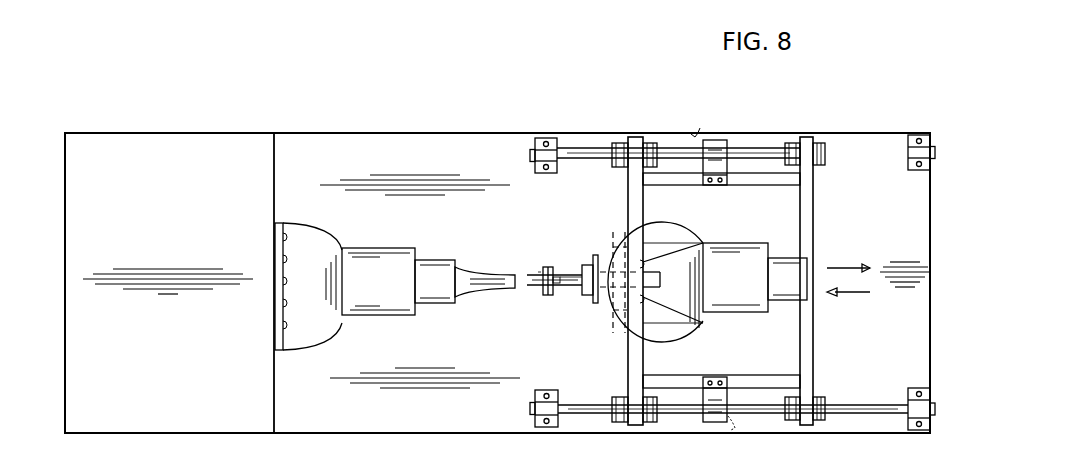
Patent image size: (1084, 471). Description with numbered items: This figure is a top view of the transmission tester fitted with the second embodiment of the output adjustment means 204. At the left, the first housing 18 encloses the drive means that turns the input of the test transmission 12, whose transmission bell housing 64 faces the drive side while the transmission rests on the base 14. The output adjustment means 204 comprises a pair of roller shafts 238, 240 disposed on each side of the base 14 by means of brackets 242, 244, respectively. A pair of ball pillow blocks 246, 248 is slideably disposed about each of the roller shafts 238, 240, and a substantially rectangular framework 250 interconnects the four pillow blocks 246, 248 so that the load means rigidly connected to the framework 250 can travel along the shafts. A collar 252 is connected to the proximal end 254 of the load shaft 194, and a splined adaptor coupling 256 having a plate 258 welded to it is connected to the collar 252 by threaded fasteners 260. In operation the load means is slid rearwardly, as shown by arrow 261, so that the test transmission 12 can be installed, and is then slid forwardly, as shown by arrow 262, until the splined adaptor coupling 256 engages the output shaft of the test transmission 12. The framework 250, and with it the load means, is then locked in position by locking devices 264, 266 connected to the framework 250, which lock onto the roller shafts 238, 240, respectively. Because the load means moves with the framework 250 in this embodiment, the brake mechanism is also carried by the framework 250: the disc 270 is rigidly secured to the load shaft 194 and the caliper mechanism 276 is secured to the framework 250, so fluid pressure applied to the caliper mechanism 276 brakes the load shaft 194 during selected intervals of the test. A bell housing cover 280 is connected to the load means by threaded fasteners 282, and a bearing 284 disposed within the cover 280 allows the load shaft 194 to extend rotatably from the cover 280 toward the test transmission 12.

The test transmission 12 is at (362, 236).
The base 14 is at (420, 281).
The first housing 18 is at (168, 256).
The transmission bell housing 64 is at (301, 334).
The load shaft 194 is at (576, 288).
The output adjustment means 204 is at (616, 88).
The roller shaft 238 is at (578, 148).
The roller shaft 240 is at (587, 417).
The bracket 242 is at (542, 150).
The bracket 244 is at (540, 415).
The ball pillow block 246 is at (652, 145).
The ball pillow block 248 is at (650, 422).
The framework 250 is at (638, 186).
The collar 252 is at (546, 267).
The proximal end 254 is at (564, 292).
The splined adaptor coupling 256 is at (530, 282).
The plate 258 is at (540, 292).
The threaded fasteners 260 is at (541, 272).
The arrow 261 is at (841, 268).
The arrow 262 is at (850, 292).
The locking device 264 is at (718, 155).
The locking device 266 is at (715, 413).
The disc 270 is at (624, 340).
The caliper mechanism 276 is at (606, 242).
The bell housing cover 280 is at (619, 236).
The threaded fasteners 282 is at (668, 236).
The bearing 284 is at (592, 263).